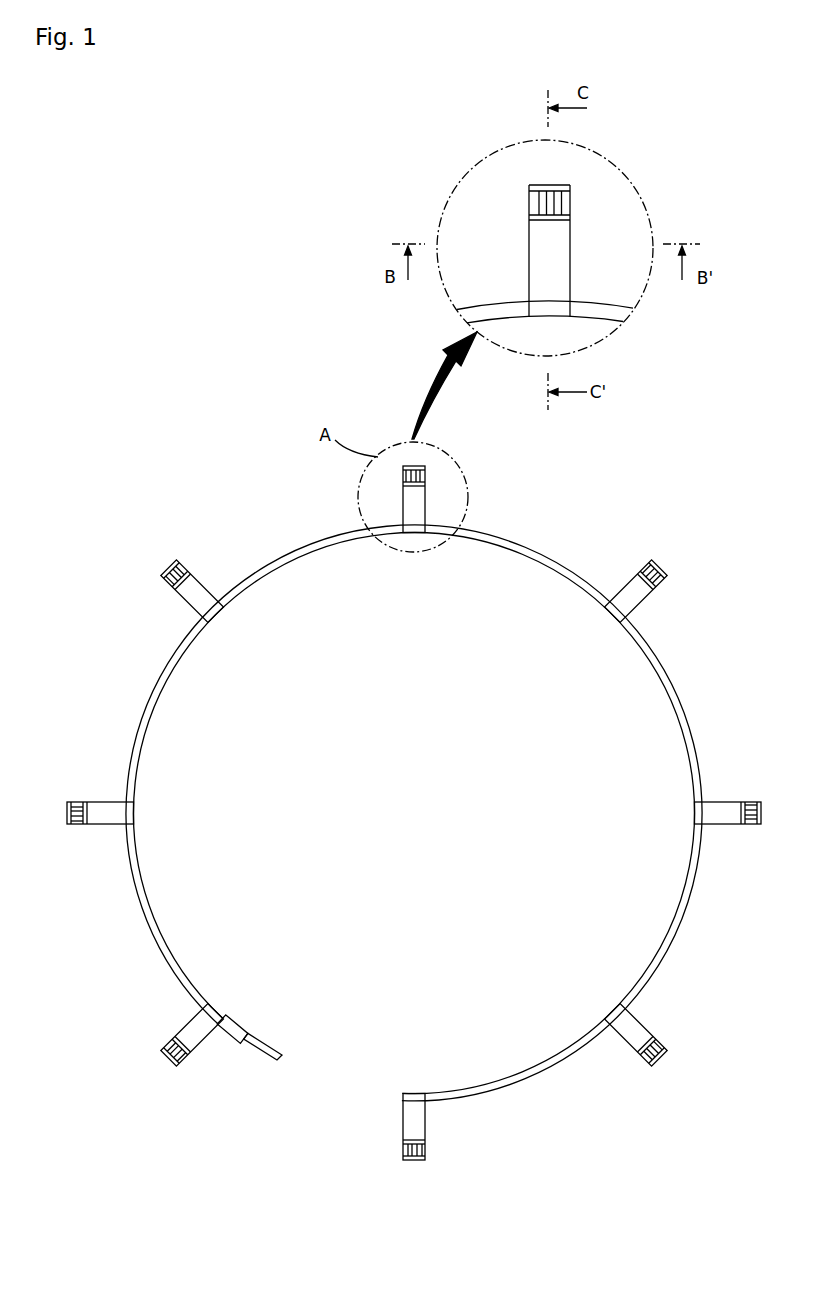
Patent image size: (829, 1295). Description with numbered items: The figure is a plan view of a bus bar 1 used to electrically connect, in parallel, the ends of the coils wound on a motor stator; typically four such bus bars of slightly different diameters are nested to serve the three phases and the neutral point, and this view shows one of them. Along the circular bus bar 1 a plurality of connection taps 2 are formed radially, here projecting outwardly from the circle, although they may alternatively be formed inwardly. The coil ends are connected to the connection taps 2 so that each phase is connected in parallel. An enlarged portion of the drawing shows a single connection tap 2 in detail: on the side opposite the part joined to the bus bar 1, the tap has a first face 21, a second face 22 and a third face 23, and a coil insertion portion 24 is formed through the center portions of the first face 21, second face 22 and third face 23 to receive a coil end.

The bus bar 1 is at (142, 907).
The connection tap 2 is at (557, 277).
The first face 21 is at (560, 218).
The second face 22 is at (565, 203).
The third face 23 is at (553, 187).
The coil insertion portion 24 is at (542, 207).